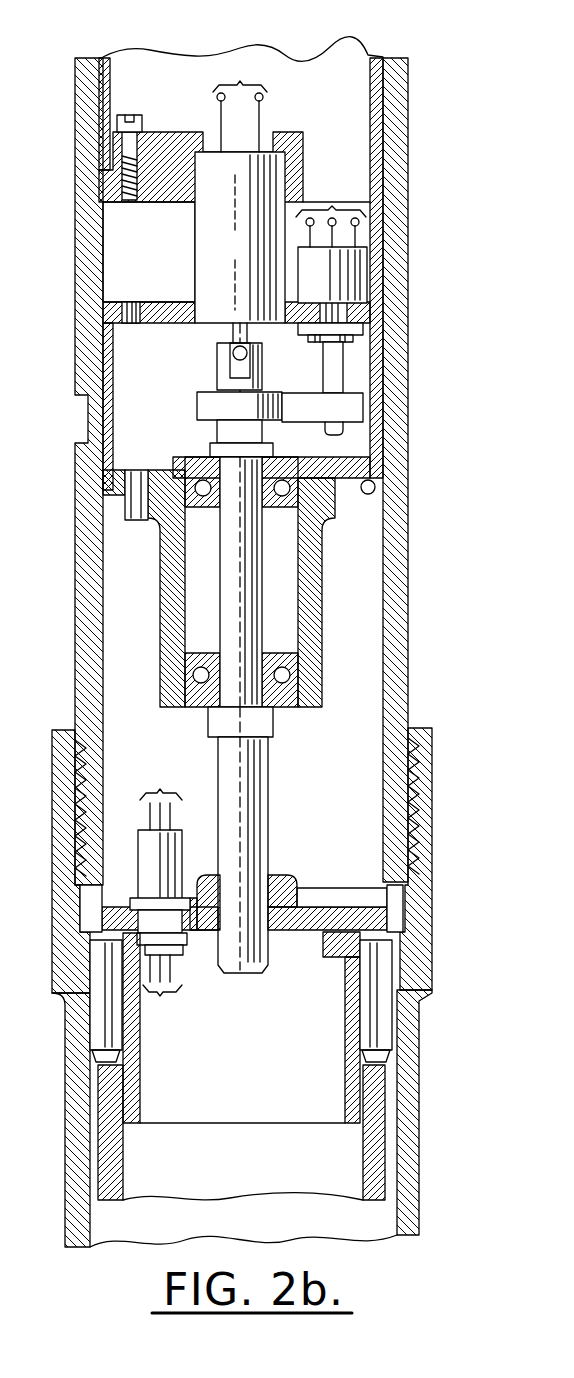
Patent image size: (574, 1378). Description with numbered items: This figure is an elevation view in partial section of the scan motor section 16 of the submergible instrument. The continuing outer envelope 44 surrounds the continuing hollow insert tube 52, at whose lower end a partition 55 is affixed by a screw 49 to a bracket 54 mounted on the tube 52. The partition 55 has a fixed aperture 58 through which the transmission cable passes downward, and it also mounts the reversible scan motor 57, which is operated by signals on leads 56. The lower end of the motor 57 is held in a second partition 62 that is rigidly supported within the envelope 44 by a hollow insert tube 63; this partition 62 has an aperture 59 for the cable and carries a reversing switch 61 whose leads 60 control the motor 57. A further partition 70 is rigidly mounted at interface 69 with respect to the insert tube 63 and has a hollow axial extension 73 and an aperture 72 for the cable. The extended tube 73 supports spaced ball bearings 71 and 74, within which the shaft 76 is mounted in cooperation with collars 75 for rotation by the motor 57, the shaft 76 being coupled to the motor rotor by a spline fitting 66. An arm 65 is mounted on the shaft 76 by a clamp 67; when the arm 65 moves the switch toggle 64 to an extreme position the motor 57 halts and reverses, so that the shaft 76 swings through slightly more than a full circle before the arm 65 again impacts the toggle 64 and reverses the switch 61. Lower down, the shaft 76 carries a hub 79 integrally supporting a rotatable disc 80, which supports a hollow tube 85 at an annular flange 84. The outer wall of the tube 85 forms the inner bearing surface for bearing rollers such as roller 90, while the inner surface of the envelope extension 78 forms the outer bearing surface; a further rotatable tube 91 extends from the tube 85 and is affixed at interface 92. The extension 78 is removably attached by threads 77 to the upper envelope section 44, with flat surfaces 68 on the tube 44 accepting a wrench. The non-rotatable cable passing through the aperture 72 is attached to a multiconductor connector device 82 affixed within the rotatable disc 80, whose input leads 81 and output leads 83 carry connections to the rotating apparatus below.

The scan motor section 16 is at (73, 515).
The outer envelope 44 is at (410, 92).
The screw 49 is at (140, 115).
The hollow insert tube 52 is at (374, 60).
The bracket 54 is at (113, 172).
The partition 55 is at (172, 205).
The leads 56 is at (240, 104).
The reversible scan motor 57 is at (200, 272).
The aperture 58 is at (372, 140).
The aperture 59 is at (148, 310).
The leads 60 is at (332, 208).
The reversing switch 61 is at (368, 265).
The second partition 62 is at (375, 312).
The hollow insert tube 63 is at (365, 352).
The switch toggle 64 is at (323, 372).
The arm 65 is at (320, 436).
The spline 66 is at (217, 360).
The clamp 67 is at (197, 402).
The flat surfaces 68 is at (88, 420).
The interface 69 is at (378, 488).
The partition 70 is at (335, 530).
The ball bearing 71 is at (210, 465).
The aperture 72 is at (140, 520).
The hollow axial extension 73 is at (160, 612).
The ball bearing 74 is at (312, 703).
The collars 75 is at (195, 460).
The shaft 76 is at (270, 755).
The threads 77 is at (432, 735).
The envelope extension 78 is at (432, 845).
The hub 79 is at (292, 880).
The rotatable disc 80 is at (342, 906).
The input leads 81 is at (161, 798).
The multiconductor connector device 82 is at (182, 858).
The output leads 83 is at (162, 986).
The annular flange 84 is at (345, 945).
The hollow tube 85 is at (360, 1025).
The bearing roller 90 is at (420, 1020).
The rotatable tube 91 is at (420, 1088).
The interface 92 is at (365, 1100).